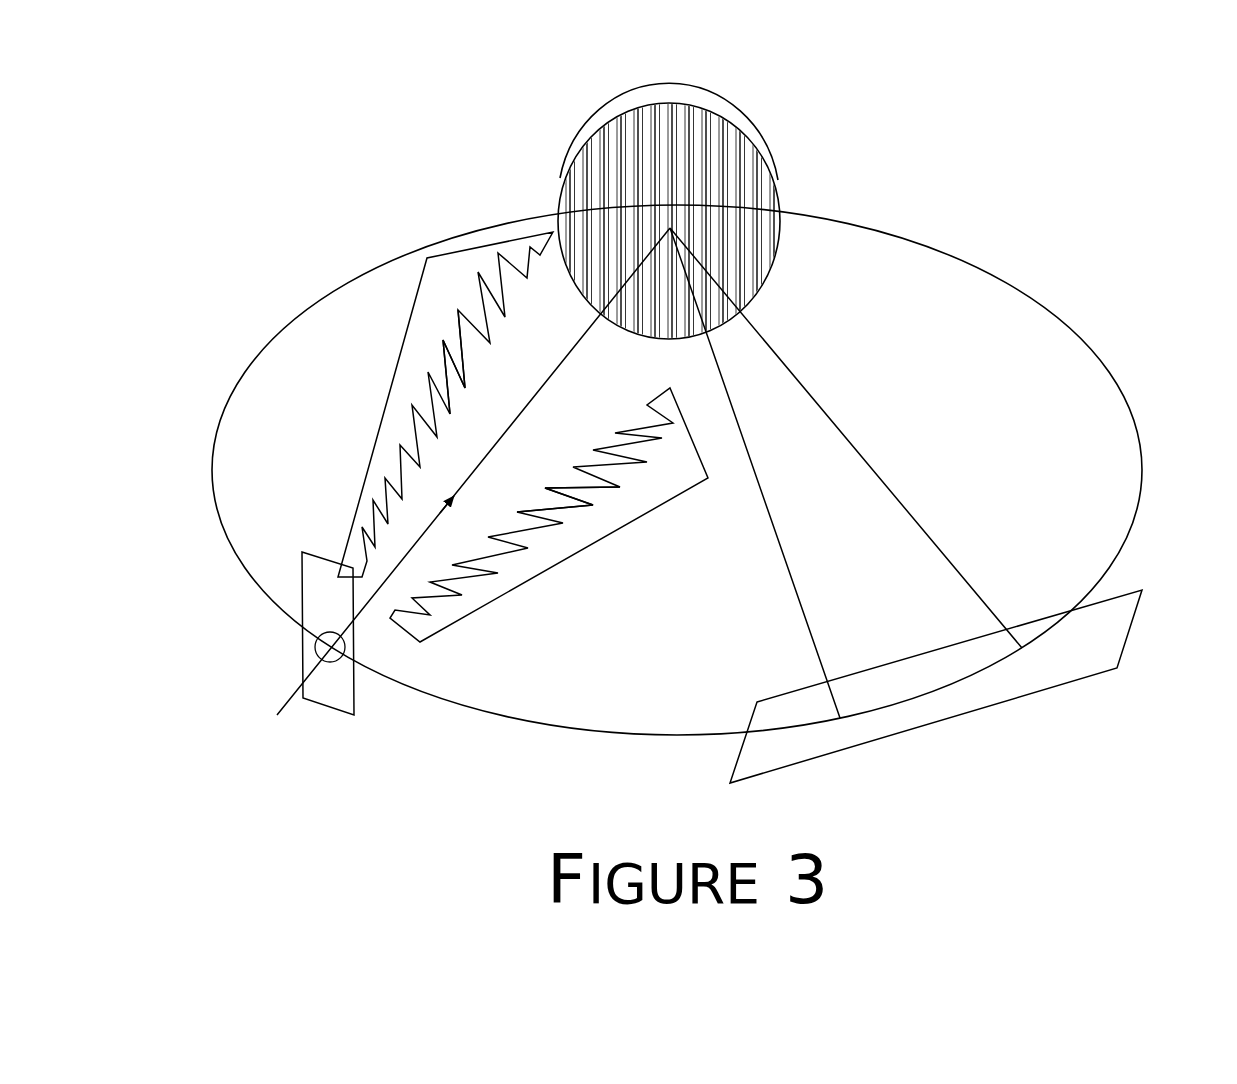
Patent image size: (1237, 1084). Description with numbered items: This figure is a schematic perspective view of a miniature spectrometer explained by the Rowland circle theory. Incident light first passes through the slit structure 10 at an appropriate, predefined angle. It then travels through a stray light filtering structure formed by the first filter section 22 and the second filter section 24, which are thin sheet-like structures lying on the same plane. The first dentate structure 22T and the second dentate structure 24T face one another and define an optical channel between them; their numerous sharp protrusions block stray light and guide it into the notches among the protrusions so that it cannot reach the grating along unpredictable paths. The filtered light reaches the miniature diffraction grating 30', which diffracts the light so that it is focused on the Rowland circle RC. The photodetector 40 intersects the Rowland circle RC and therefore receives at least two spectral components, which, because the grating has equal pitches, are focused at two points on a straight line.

The Rowland circle RC is at (257, 353).
The miniature diffraction grating 30' is at (712, 214).
The first filter section 22 is at (402, 304).
The first dentate structure 22T is at (464, 363).
The second filter section 24 is at (575, 558).
The second dentate structure 24T is at (570, 490).
The slit structure 10 is at (310, 607).
The photodetector 40 is at (1118, 635).